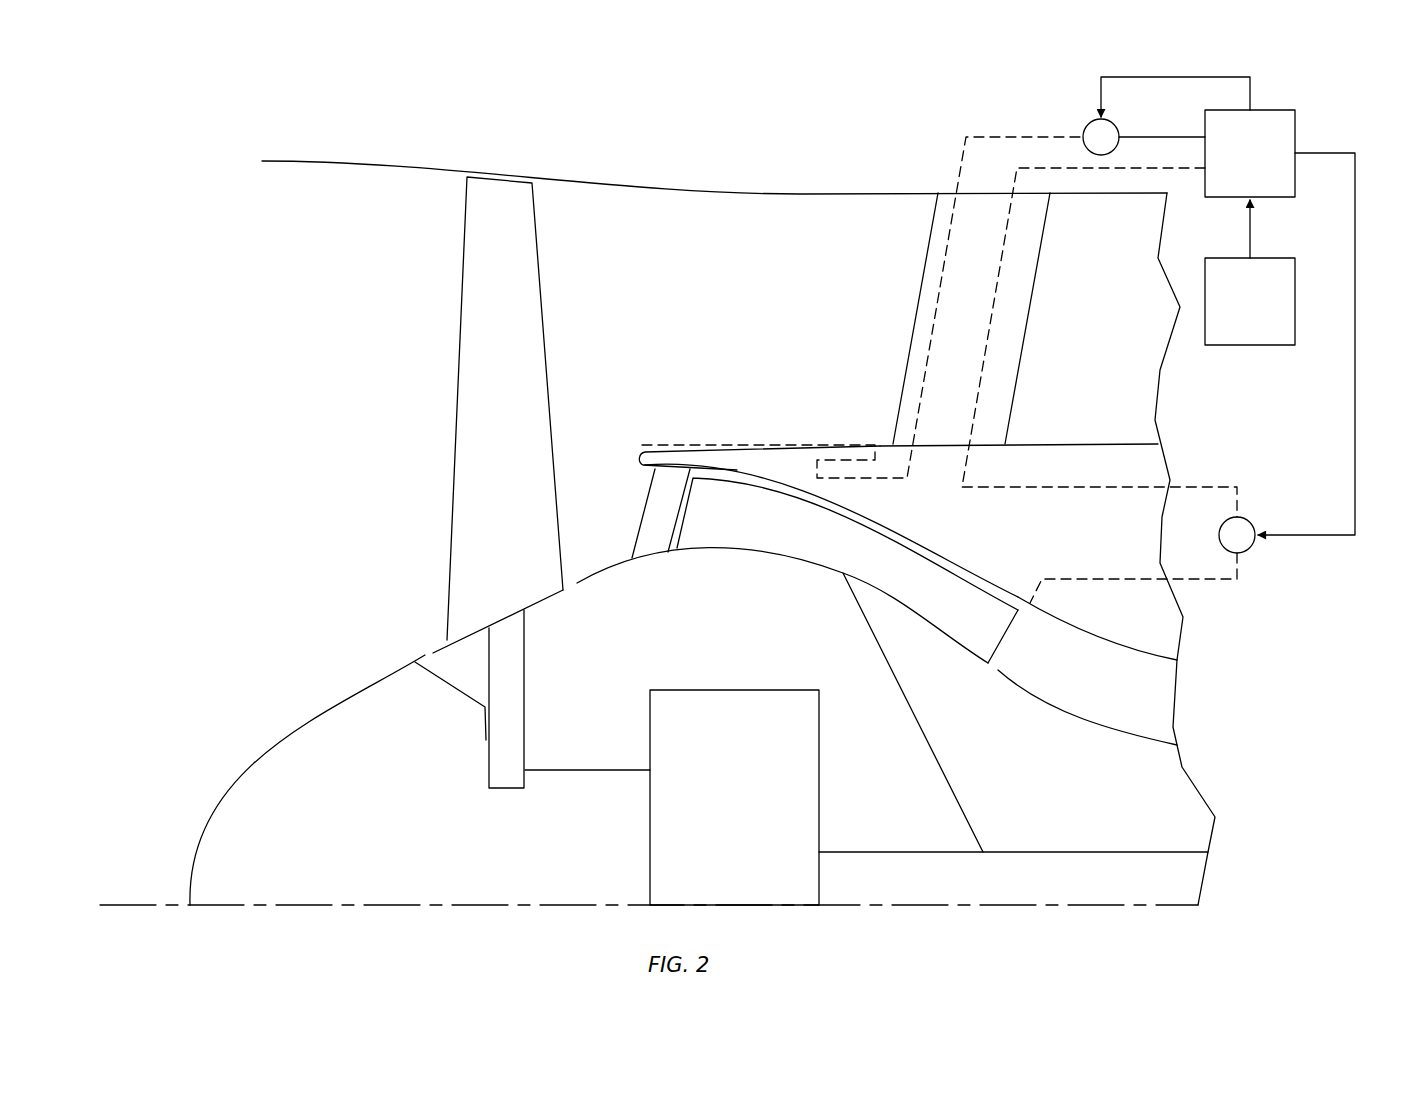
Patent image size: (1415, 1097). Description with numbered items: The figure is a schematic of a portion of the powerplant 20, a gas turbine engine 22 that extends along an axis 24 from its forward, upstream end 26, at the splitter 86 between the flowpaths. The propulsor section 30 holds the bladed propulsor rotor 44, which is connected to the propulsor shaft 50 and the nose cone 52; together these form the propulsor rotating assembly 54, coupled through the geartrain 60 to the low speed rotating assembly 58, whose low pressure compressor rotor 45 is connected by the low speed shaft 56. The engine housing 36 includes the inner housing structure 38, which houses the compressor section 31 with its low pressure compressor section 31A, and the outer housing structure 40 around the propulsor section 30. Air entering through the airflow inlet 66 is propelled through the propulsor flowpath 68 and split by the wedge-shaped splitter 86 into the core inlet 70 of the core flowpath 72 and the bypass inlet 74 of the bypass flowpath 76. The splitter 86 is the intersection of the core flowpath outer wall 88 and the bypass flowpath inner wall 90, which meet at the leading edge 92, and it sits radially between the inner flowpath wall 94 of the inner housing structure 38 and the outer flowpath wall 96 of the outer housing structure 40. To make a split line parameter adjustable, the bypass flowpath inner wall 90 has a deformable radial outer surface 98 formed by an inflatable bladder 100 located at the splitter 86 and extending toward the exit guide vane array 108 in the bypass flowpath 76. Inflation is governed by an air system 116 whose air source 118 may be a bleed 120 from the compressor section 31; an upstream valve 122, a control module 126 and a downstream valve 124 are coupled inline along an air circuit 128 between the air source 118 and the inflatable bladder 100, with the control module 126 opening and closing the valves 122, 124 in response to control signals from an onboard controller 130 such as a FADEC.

The powerplant 20 is at (150, 106).
The gas turbine engine 22 is at (79, 75).
The axis 24 is at (130, 908).
The forward, upstream end 26 is at (188, 893).
The propulsor section 30 is at (501, 145).
The compressor section 31 is at (702, 593).
The low pressure compressor (LPC) section 31A is at (646, 620).
The engine housing 36 is at (871, 170).
The inner housing structure 38 is at (1160, 648).
The outer housing structure 40 is at (761, 188).
The propulsor rotor 44 is at (428, 562).
The low pressure compressor (LPC) rotor 45 is at (880, 652).
The propulsor shaft 50 is at (595, 775).
The nose cone 52 is at (253, 763).
The propulsor rotating assembly 54 is at (463, 790).
The low speed shaft 56 is at (1100, 855).
The low speed rotating assembly 58 is at (1192, 834).
The geartrain 60 is at (748, 813).
The airflow inlet 66 is at (213, 419).
The propulsor flowpath 68 is at (373, 427).
The core inlet 70 is at (615, 497).
The core flowpath 72 is at (1103, 690).
The bypass inlet 74 is at (638, 318).
The bypass flowpath 76 is at (812, 338).
The splitter 86 is at (641, 465).
The core flowpath outer wall 88 is at (720, 478).
The bypass flowpath inner wall 90 is at (725, 443).
The leading edge 92 is at (614, 393).
The inner flowpath wall 94 is at (610, 566).
The outer flowpath wall 96 is at (587, 185).
The deformable radial outer surface 98 is at (767, 445).
The inflatable bladder 100 is at (803, 443).
The exit guide vane array 108 is at (1030, 345).
The air system 116 is at (1322, 102).
The air source 118 is at (1030, 603).
The bleed 120 is at (1133, 563).
The upstream valve 122 is at (1252, 550).
The downstream valve 124 is at (1086, 122).
The control module 126 is at (1269, 163).
The air circuit 128 is at (1190, 487).
The onboard controller 130 is at (1269, 311).